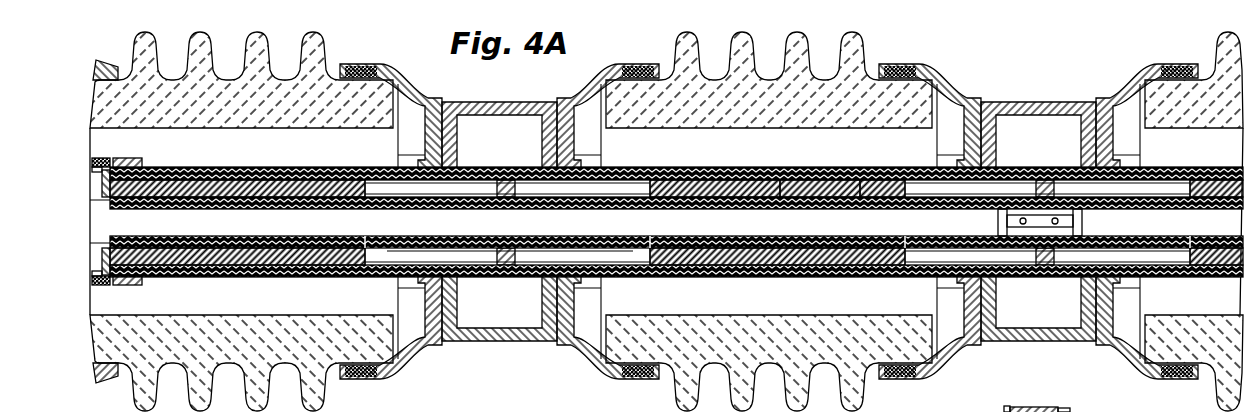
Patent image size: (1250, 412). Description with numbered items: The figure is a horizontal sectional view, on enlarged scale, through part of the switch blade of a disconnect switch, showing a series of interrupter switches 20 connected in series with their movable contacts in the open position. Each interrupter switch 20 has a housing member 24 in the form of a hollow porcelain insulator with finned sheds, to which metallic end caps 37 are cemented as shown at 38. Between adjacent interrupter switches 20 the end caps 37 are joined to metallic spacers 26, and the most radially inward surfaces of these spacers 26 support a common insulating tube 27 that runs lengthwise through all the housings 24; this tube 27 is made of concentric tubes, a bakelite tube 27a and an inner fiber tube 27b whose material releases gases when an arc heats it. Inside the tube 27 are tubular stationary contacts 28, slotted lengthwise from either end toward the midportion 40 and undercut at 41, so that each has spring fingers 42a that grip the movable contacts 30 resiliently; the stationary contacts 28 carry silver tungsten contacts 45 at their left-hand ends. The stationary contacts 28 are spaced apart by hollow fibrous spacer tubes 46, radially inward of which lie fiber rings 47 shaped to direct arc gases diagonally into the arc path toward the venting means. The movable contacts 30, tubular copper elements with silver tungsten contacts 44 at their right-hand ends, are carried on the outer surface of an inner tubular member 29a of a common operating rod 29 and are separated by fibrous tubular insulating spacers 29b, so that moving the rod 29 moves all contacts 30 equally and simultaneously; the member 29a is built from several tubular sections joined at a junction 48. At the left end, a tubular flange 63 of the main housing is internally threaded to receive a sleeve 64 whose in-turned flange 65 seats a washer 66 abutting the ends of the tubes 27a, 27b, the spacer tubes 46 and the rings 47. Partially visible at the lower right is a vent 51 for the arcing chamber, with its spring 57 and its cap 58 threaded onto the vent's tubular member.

The interrupter switch 20 is at (666, 218).
The housing member 24 is at (746, 62).
The spacer 26 is at (1040, 103).
The insulating tube 27 is at (722, 166).
The bakelite tube 27a is at (834, 178).
The fiber tube 27b is at (880, 178).
The stationary contact 28 is at (1022, 190).
The operating rod 29 is at (672, 213).
The inner tubular member 29a is at (810, 207).
The tubular insulating spacer 29b is at (786, 210).
The movable contact 30 is at (1125, 209).
The end cap 37 is at (934, 80).
The cement 38 is at (1160, 68).
The midportion 40 is at (1038, 276).
The undercut 41 is at (906, 237).
The spring finger 42a is at (1002, 186).
The silver tungsten contact 44 is at (1186, 234).
The silver tungsten contact 45 is at (895, 236).
The spacer tube 46 is at (769, 167).
The fiber ring 47 is at (808, 167).
The junction 48 is at (996, 215).
The vent 51 is at (1050, 405).
The spring 57 is at (1081, 407).
The cap 58 is at (1010, 407).
The tubular flange 63 is at (97, 161).
The sleeve 64 is at (142, 164).
The in-turned flange 65 is at (92, 170).
The washer 66 is at (102, 190).